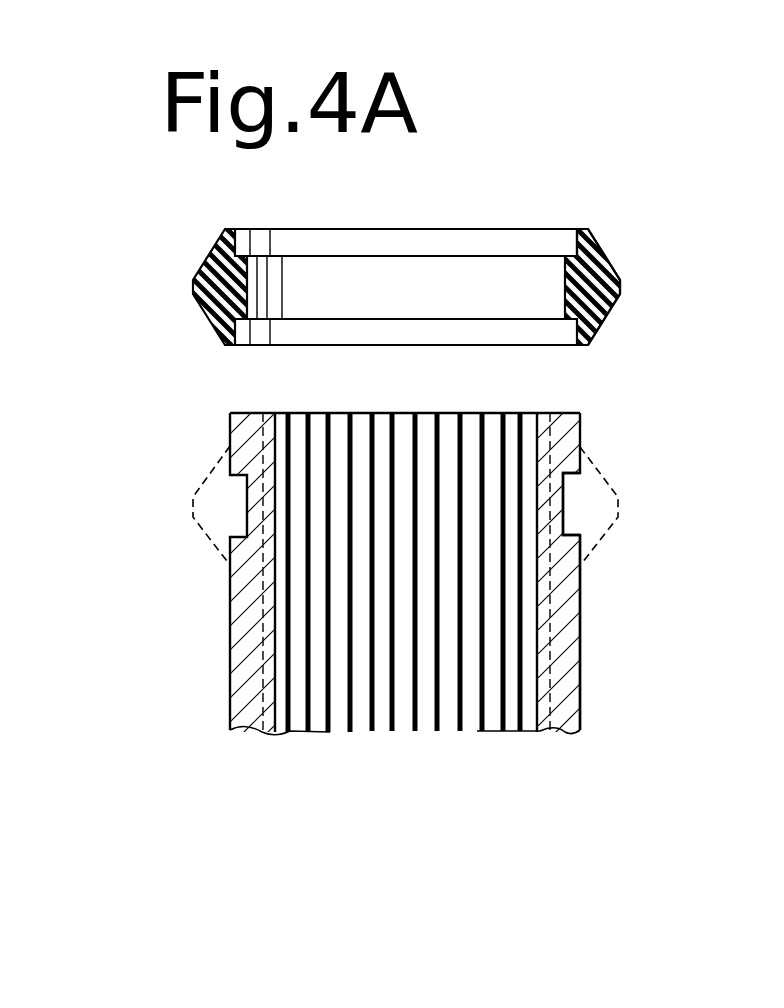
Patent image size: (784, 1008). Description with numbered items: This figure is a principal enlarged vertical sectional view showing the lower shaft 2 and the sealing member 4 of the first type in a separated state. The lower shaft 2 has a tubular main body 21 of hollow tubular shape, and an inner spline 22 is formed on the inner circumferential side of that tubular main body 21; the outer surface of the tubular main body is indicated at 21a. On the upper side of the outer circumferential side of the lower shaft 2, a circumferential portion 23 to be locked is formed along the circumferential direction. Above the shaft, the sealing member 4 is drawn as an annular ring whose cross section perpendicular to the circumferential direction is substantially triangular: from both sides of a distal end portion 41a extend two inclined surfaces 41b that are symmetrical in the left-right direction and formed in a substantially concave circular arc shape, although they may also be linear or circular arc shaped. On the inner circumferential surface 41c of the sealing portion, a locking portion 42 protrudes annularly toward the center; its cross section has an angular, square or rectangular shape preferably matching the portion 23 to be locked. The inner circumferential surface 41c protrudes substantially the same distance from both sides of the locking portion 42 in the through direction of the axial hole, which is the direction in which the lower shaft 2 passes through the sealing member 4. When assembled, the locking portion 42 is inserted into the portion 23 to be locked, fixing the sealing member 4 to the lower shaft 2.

The lower shaft 2 is at (596, 656).
The sealing member 4 is at (630, 260).
The tubular main body 21 is at (580, 602).
The outer surface of side wall 21a is at (580, 700).
The inner spline 22 is at (540, 683).
The circumferential portion to be locked 23 is at (565, 515).
The distal end portion 41a is at (621, 291).
The inclined surfaces 41b is at (604, 252).
The inner circumferential surface 41c is at (578, 231).
The locking portion 42 is at (563, 283).